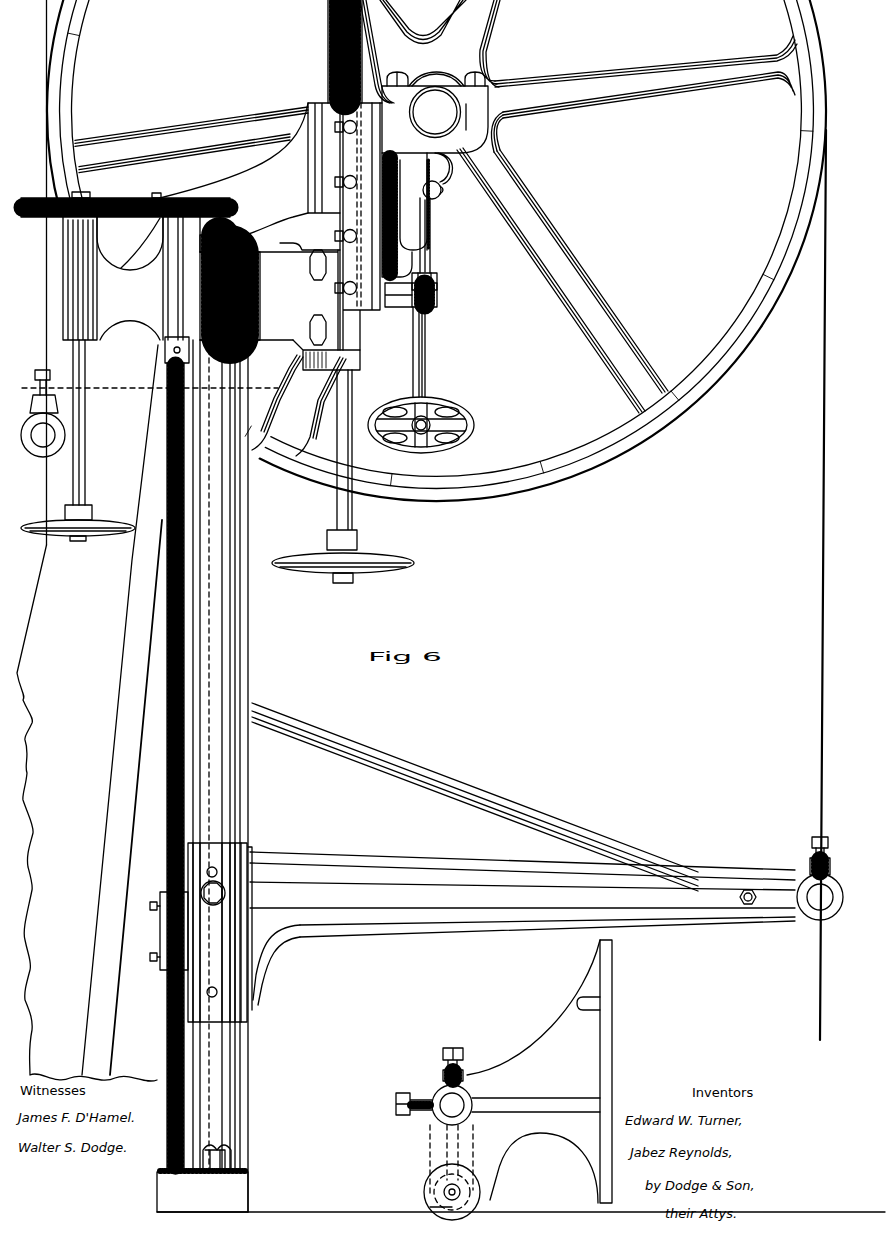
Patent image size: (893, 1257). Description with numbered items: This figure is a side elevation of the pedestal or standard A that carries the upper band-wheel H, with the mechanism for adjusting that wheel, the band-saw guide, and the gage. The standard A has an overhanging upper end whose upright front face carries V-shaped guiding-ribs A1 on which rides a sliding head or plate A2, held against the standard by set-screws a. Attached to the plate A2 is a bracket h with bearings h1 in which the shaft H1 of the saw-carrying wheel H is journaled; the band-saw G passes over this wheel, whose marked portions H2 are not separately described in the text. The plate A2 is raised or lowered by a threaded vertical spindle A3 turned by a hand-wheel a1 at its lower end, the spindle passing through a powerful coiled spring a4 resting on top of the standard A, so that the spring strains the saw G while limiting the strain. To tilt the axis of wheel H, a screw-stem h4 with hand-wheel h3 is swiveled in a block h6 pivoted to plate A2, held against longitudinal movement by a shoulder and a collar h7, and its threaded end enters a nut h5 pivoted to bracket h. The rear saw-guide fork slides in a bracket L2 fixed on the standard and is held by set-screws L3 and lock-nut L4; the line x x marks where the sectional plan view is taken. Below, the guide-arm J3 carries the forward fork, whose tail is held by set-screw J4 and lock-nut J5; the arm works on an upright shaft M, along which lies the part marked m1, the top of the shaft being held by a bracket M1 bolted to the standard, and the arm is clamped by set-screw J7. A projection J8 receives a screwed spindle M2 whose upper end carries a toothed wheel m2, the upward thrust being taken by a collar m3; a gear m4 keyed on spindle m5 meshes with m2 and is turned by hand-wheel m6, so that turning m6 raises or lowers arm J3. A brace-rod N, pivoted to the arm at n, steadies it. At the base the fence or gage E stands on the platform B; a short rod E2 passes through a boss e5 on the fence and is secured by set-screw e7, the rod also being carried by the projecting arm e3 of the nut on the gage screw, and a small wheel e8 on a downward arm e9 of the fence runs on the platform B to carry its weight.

The band-wheel H is at (66, 99).
The shaft H1 is at (435, 112).
The wheel rim tire H2 is at (72, 62).
The bracket h is at (405, 205).
The bearings h1 is at (473, 117).
The hand-wheel h3 is at (474, 425).
The screw-stem h4 is at (431, 240).
The nut h5 is at (441, 195).
The block h6 is at (437, 296).
The collar h7 is at (437, 278).
The standard A is at (199, 657).
The guiding-ribs A1 is at (365, 344).
The sliding head A2 is at (370, 206).
The threaded vertical spindle A3 is at (330, 50).
The set-screws a is at (357, 127).
The hand-wheel a1 is at (412, 565).
The coiled spring a4 is at (330, 58).
The upright shaft M is at (232, 1115).
The bracket M1 is at (200, 283).
The screwed spindle M2 is at (168, 505).
The column guide m1 is at (232, 604).
The toothed wheel m2 is at (160, 196).
The collar m3 is at (173, 350).
The toothed wheel m4 is at (122, 196).
The spindle m5 is at (86, 448).
The hand-wheel m6 is at (106, 525).
The bracket L2 is at (38, 452).
The set-screws L3 is at (52, 372).
The lock-nut L4 is at (51, 402).
The section line x is at (149, 388).
The band-saw G is at (46, 488).
The brace-rod N is at (510, 792).
The arm J3 is at (545, 928).
The set-screw J4 is at (812, 840).
The lock-nut J5 is at (835, 860).
The set-screw J7 is at (225, 893).
The projection J8 is at (160, 930).
The pivot n is at (748, 905).
The platform B is at (334, 1202).
The fence E is at (521, 1071).
The rod E2 is at (452, 1105).
The projecting arm e3 is at (470, 1207).
The boss e5 is at (468, 1093).
The set-screw e7 is at (463, 1052).
The wheel e8 is at (430, 1209).
The arm e9 is at (482, 1180).